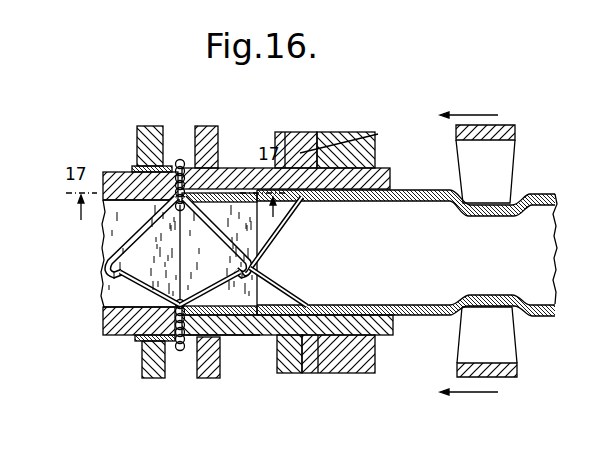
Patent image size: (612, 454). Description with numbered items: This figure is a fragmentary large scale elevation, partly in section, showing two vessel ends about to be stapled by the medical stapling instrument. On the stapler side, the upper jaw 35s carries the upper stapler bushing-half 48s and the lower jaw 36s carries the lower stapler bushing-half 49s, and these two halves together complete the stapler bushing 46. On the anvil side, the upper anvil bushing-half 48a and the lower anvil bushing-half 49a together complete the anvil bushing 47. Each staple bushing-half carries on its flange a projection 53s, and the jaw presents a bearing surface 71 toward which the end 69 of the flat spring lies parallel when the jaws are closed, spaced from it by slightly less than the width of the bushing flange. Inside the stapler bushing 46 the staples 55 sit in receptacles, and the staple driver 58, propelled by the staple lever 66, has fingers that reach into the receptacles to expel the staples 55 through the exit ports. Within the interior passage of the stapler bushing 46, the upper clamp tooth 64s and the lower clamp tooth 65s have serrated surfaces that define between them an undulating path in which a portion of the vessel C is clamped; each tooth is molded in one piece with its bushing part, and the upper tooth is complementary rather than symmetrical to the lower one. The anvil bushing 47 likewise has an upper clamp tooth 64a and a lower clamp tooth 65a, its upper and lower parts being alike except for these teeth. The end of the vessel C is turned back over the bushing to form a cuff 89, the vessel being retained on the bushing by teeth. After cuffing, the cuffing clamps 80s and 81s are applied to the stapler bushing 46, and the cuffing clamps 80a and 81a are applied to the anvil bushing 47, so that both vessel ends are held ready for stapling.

The lower anvil bushing-half 49a is at (124, 171).
The cuffing clamp 81a is at (155, 125).
The cuffing clamp 81s is at (206, 125).
The lower stapler bushing-half 49s is at (232, 167).
The projection 53s is at (296, 133).
The jaw 36s is at (356, 131).
The bearing surface 71 is at (378, 134).
The staple driver 58 is at (416, 190).
The staple lever 66 is at (516, 128).
The vessel C is at (546, 201).
The staples 55 is at (233, 252).
The upper clamp tooth 64s is at (272, 226).
The stapler bushing 46 is at (262, 257).
The lower clamp tooth 65s is at (250, 291).
The upper clamp tooth 64a is at (117, 233).
The anvil bushing 47 is at (100, 263).
The lower clamp tooth 65a is at (115, 291).
The upper anvil bushing-half 48a is at (116, 336).
The cuffing clamp 80a is at (154, 379).
The cuffing clamp 80s is at (210, 379).
The cuff 89 is at (233, 340).
The end of spring 69 is at (290, 374).
The jaw 35s is at (356, 374).
The upper stapler bushing-half 48s is at (394, 335).